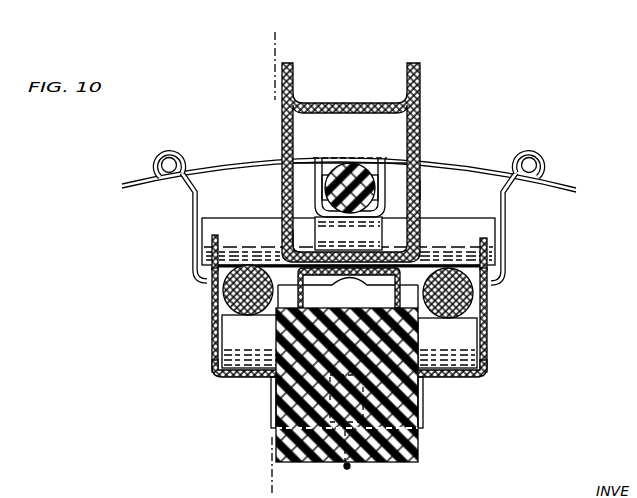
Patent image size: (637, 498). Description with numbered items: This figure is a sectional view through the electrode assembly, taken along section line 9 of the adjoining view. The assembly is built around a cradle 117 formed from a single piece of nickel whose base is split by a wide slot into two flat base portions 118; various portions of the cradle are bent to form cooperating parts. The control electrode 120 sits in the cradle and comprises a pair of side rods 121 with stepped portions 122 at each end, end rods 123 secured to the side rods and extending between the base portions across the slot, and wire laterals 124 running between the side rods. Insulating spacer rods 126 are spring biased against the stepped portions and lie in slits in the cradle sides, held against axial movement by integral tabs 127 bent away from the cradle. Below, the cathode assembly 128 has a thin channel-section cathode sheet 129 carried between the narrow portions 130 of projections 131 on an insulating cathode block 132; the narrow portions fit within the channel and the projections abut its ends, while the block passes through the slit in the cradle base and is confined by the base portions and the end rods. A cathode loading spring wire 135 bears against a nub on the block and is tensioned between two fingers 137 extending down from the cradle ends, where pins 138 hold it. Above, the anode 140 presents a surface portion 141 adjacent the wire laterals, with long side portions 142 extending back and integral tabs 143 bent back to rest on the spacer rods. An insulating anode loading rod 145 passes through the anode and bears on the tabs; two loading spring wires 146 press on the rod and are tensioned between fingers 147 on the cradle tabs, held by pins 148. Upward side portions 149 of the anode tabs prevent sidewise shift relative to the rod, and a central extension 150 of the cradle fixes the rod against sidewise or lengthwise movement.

The section line 9- 9 is at (273, 42).
The cradle 117 is at (488, 338).
The base portions 118 is at (243, 376).
The control electrode 120 is at (230, 337).
The side rods 121 is at (224, 301).
The stepped portions 122 is at (225, 289).
The end rods 123 is at (465, 349).
The wire laterals 124 is at (423, 263).
The insulating spacer rods 126 is at (232, 220).
The integral tabs 127 is at (193, 244).
The cathode assembly 128 is at (397, 297).
The cathode sheet 129 is at (297, 297).
The narrow portions 130 is at (461, 289).
The projections 131 is at (471, 302).
The insulating cathode block 132 is at (406, 399).
The cathode loading spring wire 135 is at (349, 469).
The fingers 137 is at (272, 403).
The pins 138 is at (338, 463).
The anode 140 is at (463, 186).
The surface portion 141 is at (313, 257).
The side portions 142 is at (282, 139).
The integral tabs 143 is at (367, 232).
The insulating anode loading rod 145 is at (345, 176).
The loading spring wires 146 is at (128, 181).
The fingers 147 is at (168, 150).
The pins 148 is at (171, 172).
The upward side portions 149 is at (316, 184).
The extension 150 is at (373, 162).